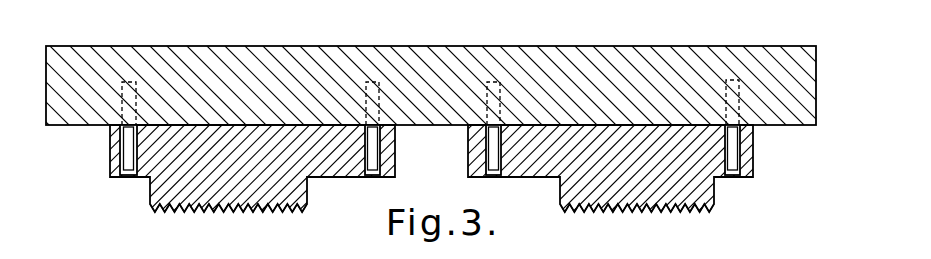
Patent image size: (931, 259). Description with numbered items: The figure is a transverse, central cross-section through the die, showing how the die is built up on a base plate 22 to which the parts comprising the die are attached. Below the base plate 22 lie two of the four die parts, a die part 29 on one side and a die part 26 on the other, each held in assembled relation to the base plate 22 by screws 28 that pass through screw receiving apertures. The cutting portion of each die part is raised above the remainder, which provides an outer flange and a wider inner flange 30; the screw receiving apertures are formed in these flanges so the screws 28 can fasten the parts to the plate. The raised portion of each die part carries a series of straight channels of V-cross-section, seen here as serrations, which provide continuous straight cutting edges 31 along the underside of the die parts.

The base plate 22 is at (325, 62).
The die part 26 is at (753, 165).
The screws 28 is at (125, 175).
The die part 29 is at (120, 163).
The inner flange 30 is at (376, 150).
The cutting edges 31 is at (222, 203).